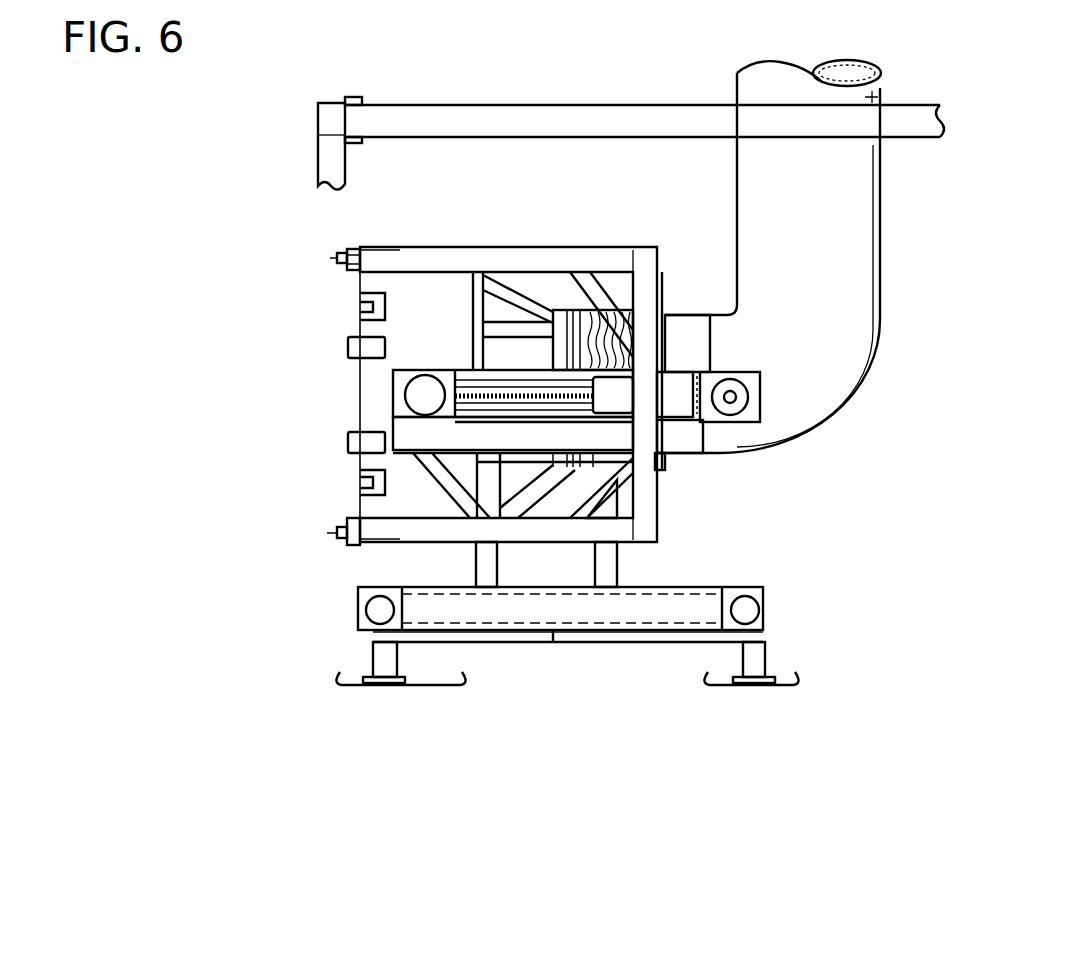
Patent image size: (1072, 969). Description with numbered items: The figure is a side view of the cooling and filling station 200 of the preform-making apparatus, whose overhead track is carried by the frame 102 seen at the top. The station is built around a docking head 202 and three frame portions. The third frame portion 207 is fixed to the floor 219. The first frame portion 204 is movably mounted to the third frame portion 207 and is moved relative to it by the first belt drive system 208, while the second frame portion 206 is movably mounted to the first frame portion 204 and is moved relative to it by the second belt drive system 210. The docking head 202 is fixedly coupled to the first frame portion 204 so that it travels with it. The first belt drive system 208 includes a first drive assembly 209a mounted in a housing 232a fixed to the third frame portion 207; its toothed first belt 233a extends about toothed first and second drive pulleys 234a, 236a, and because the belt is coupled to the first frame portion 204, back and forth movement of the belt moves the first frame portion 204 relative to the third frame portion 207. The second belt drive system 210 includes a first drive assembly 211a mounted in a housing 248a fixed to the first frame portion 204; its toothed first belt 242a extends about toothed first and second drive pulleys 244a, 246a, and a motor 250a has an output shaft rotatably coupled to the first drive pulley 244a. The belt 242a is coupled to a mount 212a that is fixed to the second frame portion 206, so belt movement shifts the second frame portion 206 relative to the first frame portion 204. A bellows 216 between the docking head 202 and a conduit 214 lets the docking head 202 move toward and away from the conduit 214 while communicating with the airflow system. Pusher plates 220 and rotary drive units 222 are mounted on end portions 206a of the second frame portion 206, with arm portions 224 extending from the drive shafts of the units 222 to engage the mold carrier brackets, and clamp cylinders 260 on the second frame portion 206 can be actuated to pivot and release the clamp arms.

The frame 102 is at (407, 115).
The conduit 214 is at (880, 97).
The cooling and filling station 200 is at (222, 385).
The docking head 202 is at (395, 292).
The second frame portion 206 is at (653, 502).
The end portions 206a is at (357, 242).
The second belt drive system 210 is at (420, 352).
The first drive assembly 211a is at (465, 358).
The bellows 216 is at (593, 333).
The housing 248a is at (678, 390).
The mount 212a is at (690, 378).
The first drive pulley 244a is at (760, 388).
The motor 250a is at (735, 398).
The second drive pulley 246a is at (410, 397).
The first belt 242a is at (497, 408).
The clamp cylinders 260 is at (373, 307).
The pusher plates 220 is at (347, 243).
The arm portions 224 is at (327, 262).
The rotary drive units 222 is at (337, 270).
The first frame portion 204 is at (615, 567).
The first belt drive system 208 is at (772, 585).
The housing 232a is at (467, 610).
The first drive pulley 234a is at (745, 610).
The second drive pulley 236a is at (360, 607).
The first belt 233a is at (560, 650).
The third frame portion 207 is at (373, 652).
The floor 219 is at (793, 663).
The first drive assembly 209a is at (521, 658).